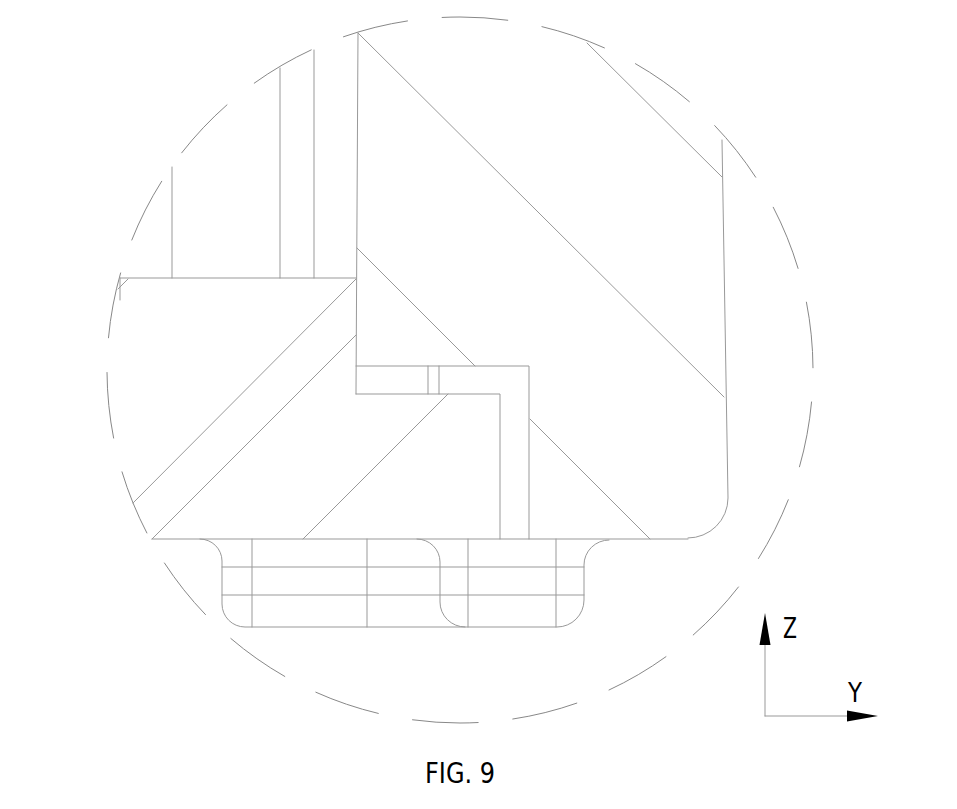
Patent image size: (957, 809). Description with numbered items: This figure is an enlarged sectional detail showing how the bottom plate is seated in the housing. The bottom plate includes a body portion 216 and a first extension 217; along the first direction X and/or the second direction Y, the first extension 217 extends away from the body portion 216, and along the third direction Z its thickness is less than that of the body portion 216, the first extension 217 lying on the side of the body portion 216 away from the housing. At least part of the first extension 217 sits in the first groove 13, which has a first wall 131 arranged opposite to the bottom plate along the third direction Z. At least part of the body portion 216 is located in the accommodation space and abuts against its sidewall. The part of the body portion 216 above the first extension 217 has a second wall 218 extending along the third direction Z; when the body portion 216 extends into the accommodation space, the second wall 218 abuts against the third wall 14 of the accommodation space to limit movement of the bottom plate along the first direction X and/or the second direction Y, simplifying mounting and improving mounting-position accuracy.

The first groove 13 is at (485, 446).
The first wall 131 is at (385, 366).
The third wall 14 is at (358, 183).
The body portion 216 is at (175, 342).
The first extension 217 is at (475, 483).
The second wall 218 is at (355, 333).